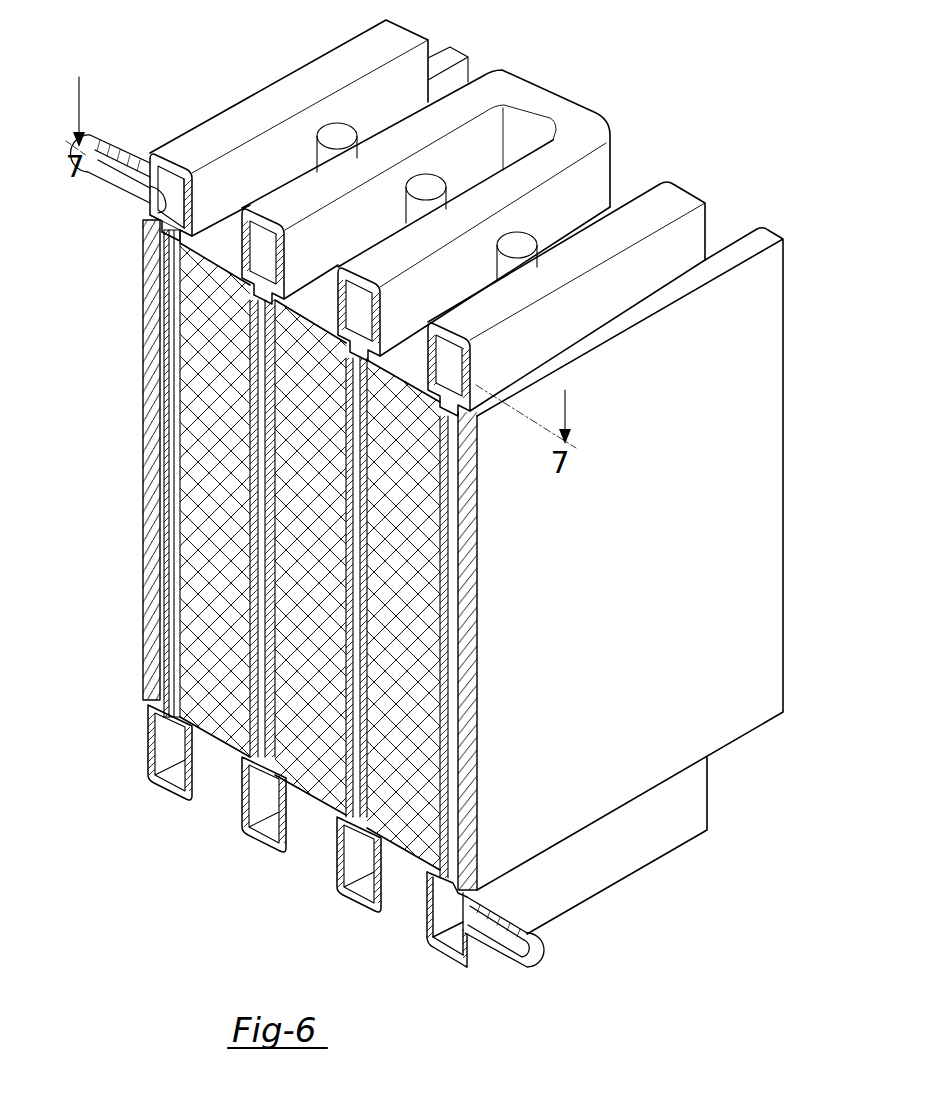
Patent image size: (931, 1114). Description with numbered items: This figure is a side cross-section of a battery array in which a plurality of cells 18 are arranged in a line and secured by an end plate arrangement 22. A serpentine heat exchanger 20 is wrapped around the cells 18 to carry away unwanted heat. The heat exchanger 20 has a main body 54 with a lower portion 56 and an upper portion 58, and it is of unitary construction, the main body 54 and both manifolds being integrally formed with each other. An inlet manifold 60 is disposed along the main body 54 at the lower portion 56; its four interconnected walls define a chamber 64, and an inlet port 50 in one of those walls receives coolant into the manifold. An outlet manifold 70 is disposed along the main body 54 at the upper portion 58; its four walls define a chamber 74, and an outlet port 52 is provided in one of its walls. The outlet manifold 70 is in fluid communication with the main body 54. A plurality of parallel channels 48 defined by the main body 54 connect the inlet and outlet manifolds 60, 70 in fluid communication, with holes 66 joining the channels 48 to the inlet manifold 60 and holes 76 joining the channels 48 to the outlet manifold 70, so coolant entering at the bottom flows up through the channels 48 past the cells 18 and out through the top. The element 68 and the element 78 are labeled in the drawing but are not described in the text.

The cells 18 is at (207, 452).
The serpentine heat exchanger 20 is at (162, 436).
The end plate arrangement 22 is at (764, 281).
The parallel channels 48 is at (168, 358).
The inlet port 50 is at (548, 937).
The outlet port 52 is at (118, 147).
The main body 54 is at (165, 388).
The lower portion 56 is at (468, 868).
The upper portion 58 is at (464, 425).
The inlet manifold 60 is at (640, 842).
The chamber 64 is at (178, 780).
The holes (ports) 66 is at (263, 780).
The coupling hook 68 is at (478, 925).
The outlet manifold 70 is at (678, 198).
The chamber 74 is at (351, 288).
The holes (ports) 76 is at (268, 277).
The coupling hook 78 is at (155, 190).